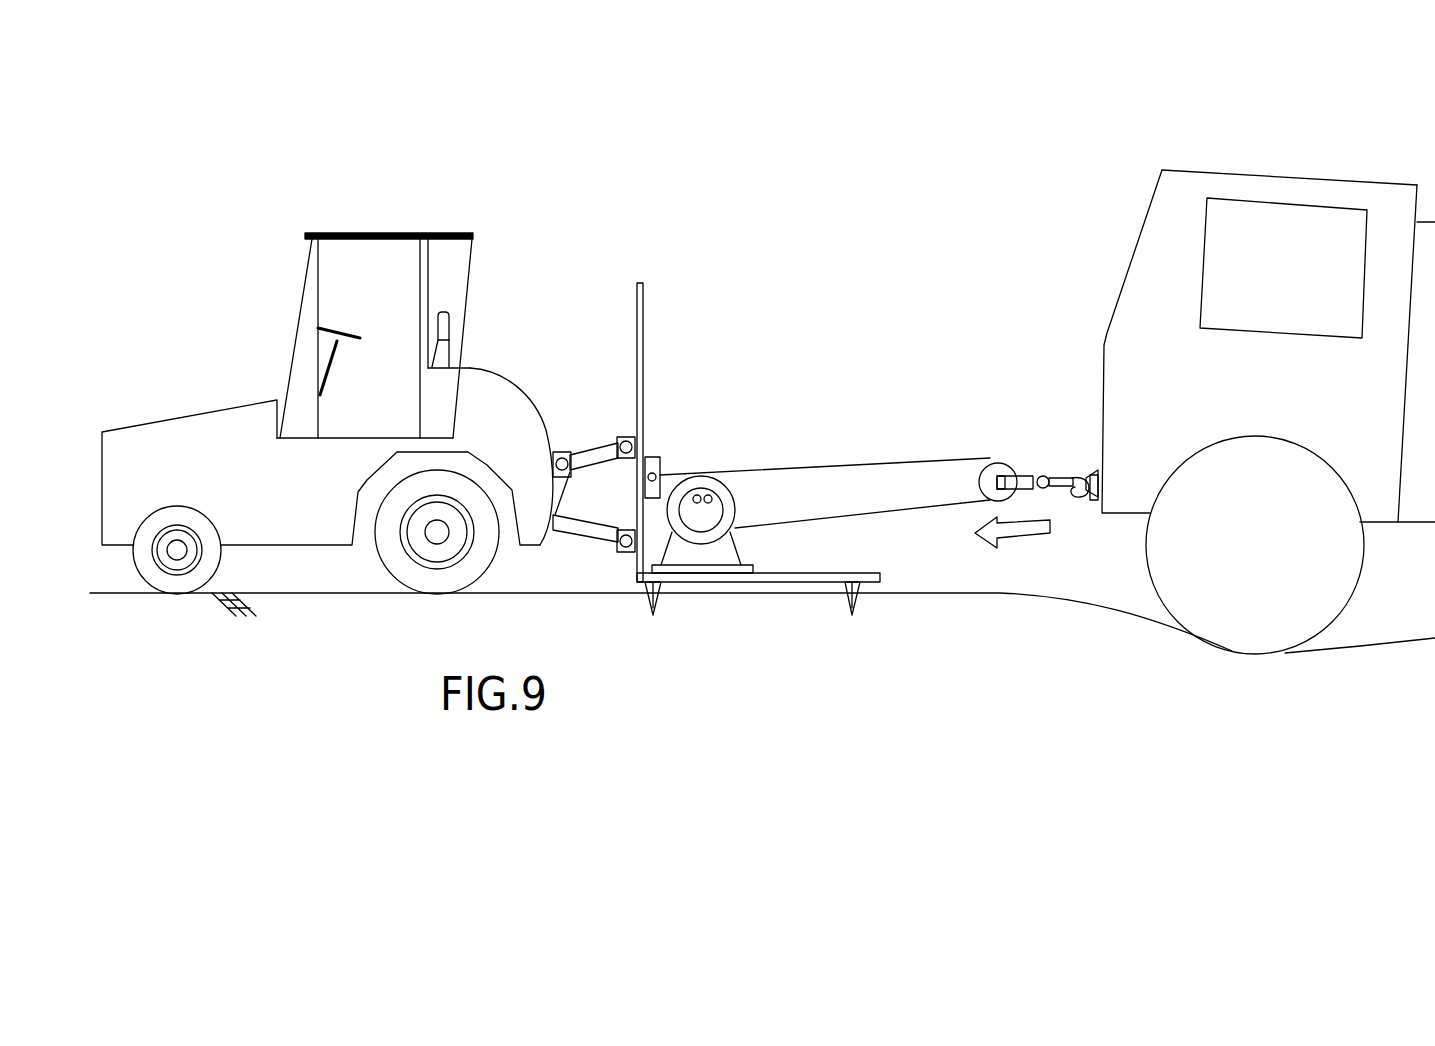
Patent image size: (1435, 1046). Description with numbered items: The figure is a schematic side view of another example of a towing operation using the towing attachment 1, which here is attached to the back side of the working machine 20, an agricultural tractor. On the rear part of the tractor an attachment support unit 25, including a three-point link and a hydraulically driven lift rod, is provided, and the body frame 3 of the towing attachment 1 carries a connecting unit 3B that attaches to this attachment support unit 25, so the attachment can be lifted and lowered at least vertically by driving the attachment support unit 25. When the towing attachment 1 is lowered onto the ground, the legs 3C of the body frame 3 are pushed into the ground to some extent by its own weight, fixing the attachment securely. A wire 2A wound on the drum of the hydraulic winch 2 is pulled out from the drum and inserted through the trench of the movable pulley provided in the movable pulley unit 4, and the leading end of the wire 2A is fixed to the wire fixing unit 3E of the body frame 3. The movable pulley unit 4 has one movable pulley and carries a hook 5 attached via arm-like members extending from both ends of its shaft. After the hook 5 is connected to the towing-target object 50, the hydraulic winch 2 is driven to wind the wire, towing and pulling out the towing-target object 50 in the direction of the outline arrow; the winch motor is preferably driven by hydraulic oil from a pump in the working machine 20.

The towing attachment 1 is at (843, 456).
The hydraulic winch 2 is at (733, 495).
The wire 2A is at (868, 463).
The body frame 3 is at (852, 573).
The connecting unit 3B is at (630, 437).
The legs 3C is at (843, 598).
The wire fixing unit 3E is at (656, 458).
The movable pulley unit 4 is at (1012, 462).
The hook 5 is at (1075, 470).
The working machine 20 is at (402, 232).
The attachment support unit 25 is at (627, 395).
The towing-target object 50 is at (1285, 170).